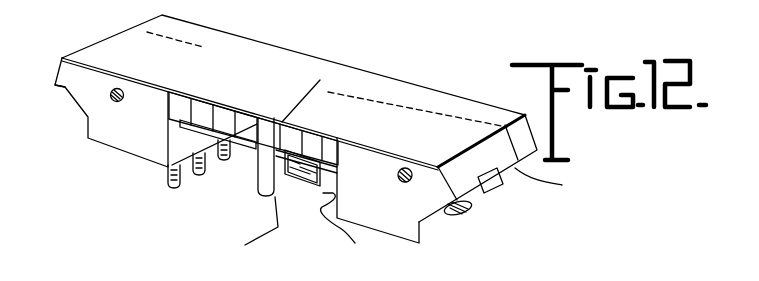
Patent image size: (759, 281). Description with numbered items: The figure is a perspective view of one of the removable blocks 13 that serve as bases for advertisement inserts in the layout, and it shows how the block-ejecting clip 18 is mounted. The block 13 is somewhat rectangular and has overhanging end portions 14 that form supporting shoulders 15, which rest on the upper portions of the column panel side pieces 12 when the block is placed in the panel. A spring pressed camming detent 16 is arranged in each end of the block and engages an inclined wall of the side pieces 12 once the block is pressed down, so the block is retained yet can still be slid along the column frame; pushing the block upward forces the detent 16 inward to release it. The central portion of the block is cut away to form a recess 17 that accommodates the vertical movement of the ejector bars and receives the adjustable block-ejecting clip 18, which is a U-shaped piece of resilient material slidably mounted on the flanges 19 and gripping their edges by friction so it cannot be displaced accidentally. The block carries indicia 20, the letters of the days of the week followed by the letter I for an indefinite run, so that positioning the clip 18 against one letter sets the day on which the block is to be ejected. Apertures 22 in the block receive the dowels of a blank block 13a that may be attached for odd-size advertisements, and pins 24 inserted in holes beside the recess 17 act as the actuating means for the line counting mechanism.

The column panel side pieces 12 is at (402, 182).
The block 13 is at (435, 150).
The blank block 13a is at (526, 128).
The overhanging end portions 14 is at (63, 72).
The supporting shoulders 15 is at (63, 91).
The spring pressed camming detent 16 is at (466, 213).
The recess 17 is at (349, 228).
The block-ejecting clip 18 is at (262, 181).
The flanges 19 is at (218, 158).
The indicia 20 is at (217, 110).
The apertures 22 is at (115, 101).
The pins 24 is at (187, 192).